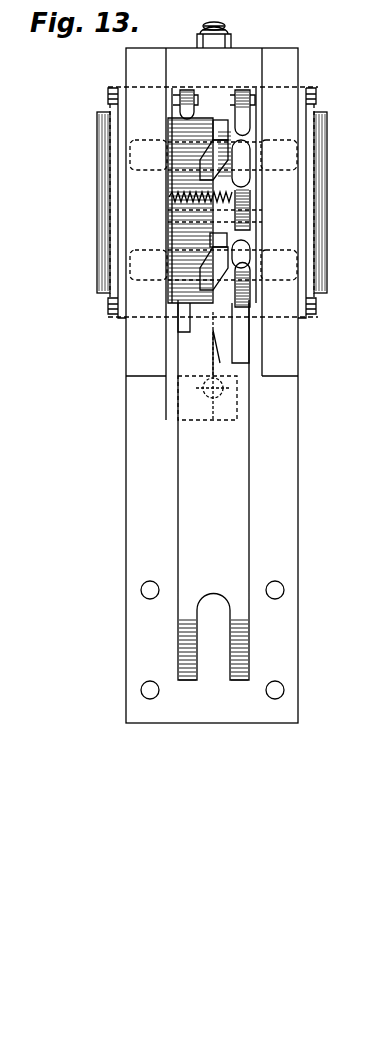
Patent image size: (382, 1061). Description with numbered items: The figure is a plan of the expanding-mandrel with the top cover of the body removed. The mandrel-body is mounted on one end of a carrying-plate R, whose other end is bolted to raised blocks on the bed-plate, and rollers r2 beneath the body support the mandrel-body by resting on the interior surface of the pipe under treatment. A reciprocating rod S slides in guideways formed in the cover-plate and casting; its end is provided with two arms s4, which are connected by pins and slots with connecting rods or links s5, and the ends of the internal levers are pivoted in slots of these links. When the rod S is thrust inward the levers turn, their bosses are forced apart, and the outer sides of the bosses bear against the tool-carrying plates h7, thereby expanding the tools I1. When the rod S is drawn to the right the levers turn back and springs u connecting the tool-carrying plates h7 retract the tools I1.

The rollers r2 is at (224, 27).
The tool-carrying plates h7 is at (302, 90).
The connecting rods or links s5 is at (237, 92).
The tools I1 is at (343, 195).
The springs u is at (213, 195).
The arms s4 is at (242, 310).
The plate R is at (212, 385).
The reciprocating rod S is at (213, 490).